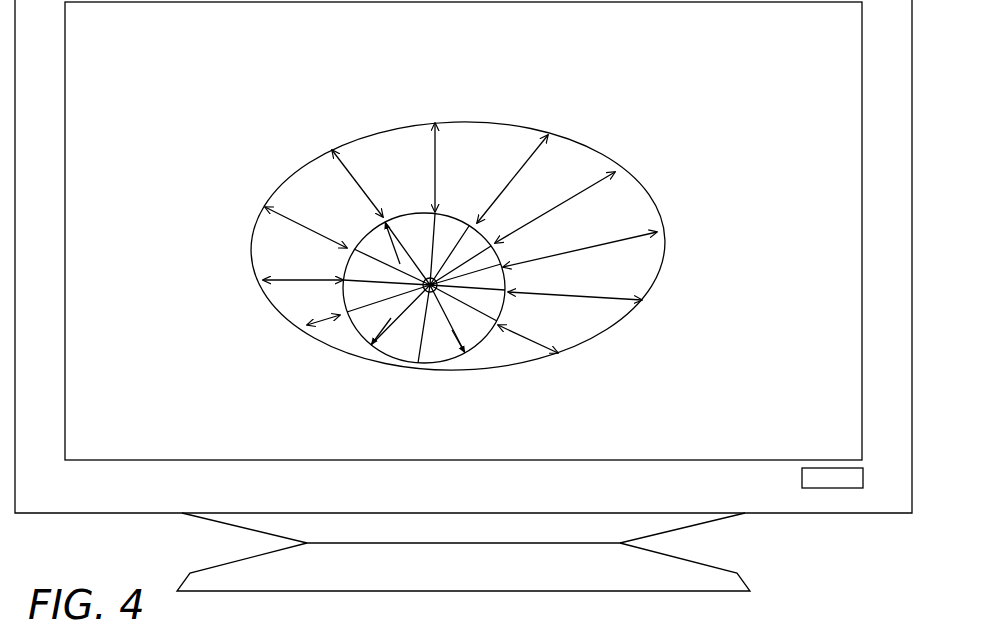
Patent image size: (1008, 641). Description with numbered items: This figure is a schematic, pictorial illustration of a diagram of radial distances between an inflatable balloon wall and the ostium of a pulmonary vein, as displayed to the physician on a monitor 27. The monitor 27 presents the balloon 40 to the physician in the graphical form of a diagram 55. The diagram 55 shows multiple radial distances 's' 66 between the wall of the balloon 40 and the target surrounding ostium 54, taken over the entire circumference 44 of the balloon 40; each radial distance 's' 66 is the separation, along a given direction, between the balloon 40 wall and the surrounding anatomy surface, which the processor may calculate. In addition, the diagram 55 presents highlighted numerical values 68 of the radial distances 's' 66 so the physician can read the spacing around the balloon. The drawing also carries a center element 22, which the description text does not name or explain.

The monitor 27 is at (842, 529).
The center point 22 is at (433, 293).
The balloon 40 is at (400, 345).
The circumference 44 is at (357, 332).
The ostium 54 is at (252, 228).
The diagram 55 is at (600, 363).
The radial distance 's' 66 is at (343, 157).
The highlighted numerical values 68 is at (308, 198).